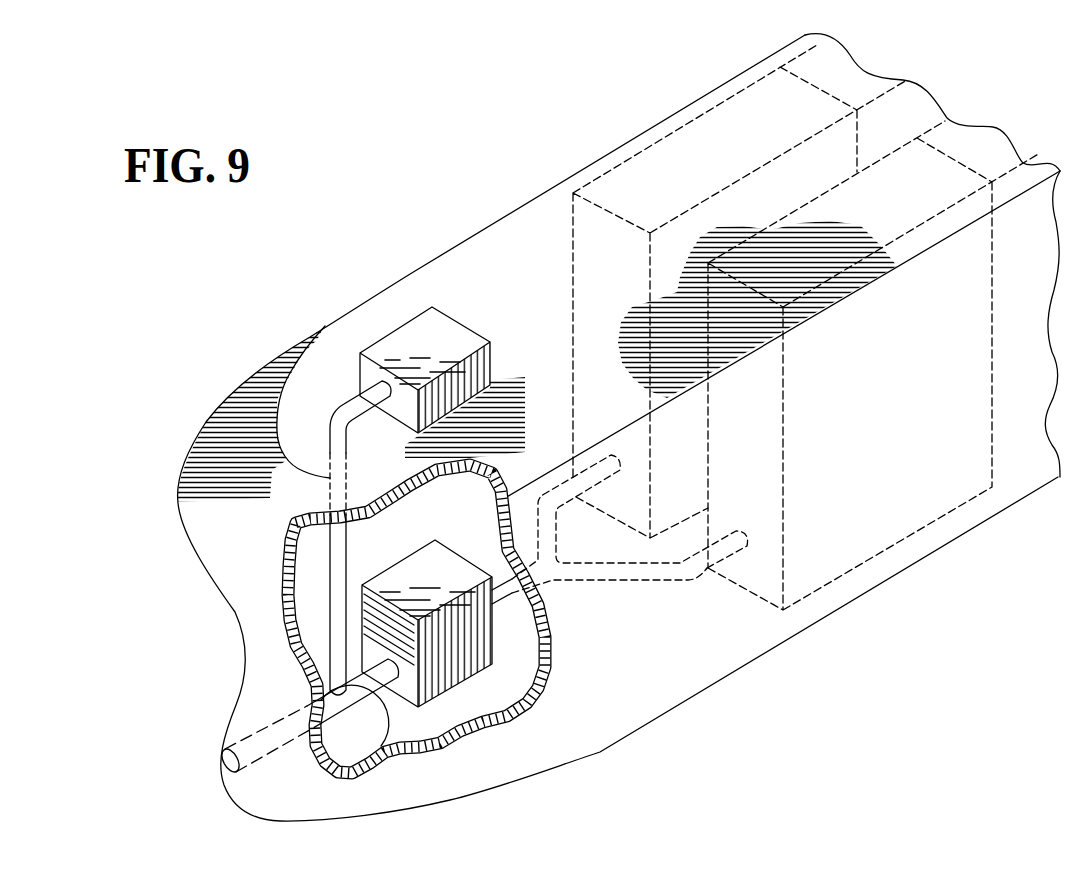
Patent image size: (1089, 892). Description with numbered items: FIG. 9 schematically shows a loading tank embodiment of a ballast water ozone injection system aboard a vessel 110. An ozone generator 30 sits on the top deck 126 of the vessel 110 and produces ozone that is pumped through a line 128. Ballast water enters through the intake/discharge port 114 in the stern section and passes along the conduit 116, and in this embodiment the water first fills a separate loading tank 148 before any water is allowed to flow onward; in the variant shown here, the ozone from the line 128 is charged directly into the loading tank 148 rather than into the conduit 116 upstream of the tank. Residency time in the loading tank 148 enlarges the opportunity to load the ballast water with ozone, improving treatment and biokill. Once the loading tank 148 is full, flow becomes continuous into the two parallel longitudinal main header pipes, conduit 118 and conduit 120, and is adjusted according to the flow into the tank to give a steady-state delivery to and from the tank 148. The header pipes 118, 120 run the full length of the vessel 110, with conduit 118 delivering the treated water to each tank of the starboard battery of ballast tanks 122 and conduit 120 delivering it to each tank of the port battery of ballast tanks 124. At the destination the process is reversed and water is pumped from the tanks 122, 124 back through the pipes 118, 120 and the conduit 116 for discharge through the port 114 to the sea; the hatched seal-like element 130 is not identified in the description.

The ozone generator 30 is at (450, 330).
The vessel 110 is at (400, 279).
The intake/discharge port 114 is at (228, 762).
The conduit 116 is at (267, 733).
The conduit 118 is at (615, 573).
The conduit 120 is at (563, 490).
The starboard battery of ballast tanks 122 is at (877, 500).
The port battery of ballast tanks 124 is at (700, 148).
The top deck 126 is at (308, 371).
The line 128 is at (250, 392).
The seal 130 is at (385, 750).
The loading tank 148 is at (417, 560).